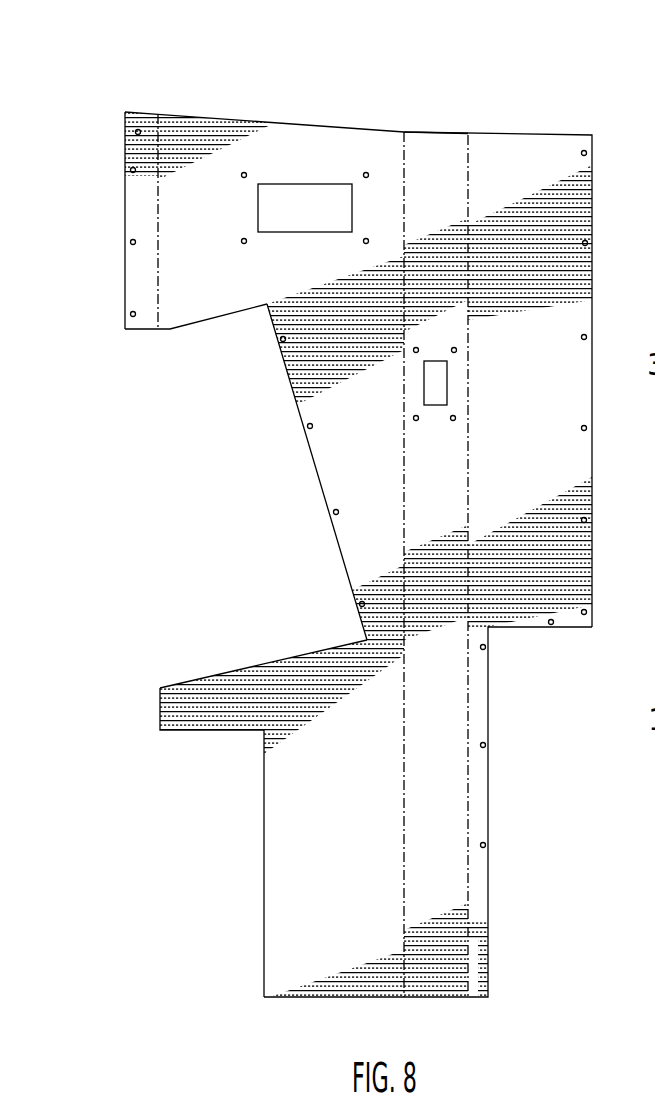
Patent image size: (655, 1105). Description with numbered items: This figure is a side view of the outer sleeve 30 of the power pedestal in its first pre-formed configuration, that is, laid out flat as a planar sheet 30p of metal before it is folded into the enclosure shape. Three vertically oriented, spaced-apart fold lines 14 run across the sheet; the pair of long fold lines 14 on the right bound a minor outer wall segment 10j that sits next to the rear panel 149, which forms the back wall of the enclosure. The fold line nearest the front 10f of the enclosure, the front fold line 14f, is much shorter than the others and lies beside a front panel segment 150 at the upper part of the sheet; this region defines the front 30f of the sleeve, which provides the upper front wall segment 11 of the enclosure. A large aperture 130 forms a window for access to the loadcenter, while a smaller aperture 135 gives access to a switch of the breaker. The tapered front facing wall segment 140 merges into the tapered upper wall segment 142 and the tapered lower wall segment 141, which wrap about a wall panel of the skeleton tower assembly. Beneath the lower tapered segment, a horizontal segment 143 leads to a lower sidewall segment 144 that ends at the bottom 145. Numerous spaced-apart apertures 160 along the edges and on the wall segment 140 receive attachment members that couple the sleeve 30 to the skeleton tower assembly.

The outer sleeve 30 is at (291, 84).
The planar sheet 30p is at (493, 1041).
The front 30f is at (130, 270).
The front of the enclosure 10f is at (132, 282).
The minor outer wall segment 10j is at (427, 160).
The front wall segment 11 is at (133, 299).
The fold lines 14 is at (158, 112).
The front fold line 14f is at (158, 148).
The aperture 130 is at (283, 184).
The aperture 135 is at (437, 361).
The tapered front facing wall segment 140 is at (303, 443).
The tapered lower wall segment 141 is at (212, 678).
The tapered upper wall segment 142 is at (173, 330).
The horizontal segment 143 is at (198, 730).
The lower sidewall segment 144 is at (300, 862).
The bottom 145 is at (325, 1000).
The rear panel 149 is at (535, 573).
The front panel segment 150 is at (127, 112).
The apertures 160 is at (131, 241).